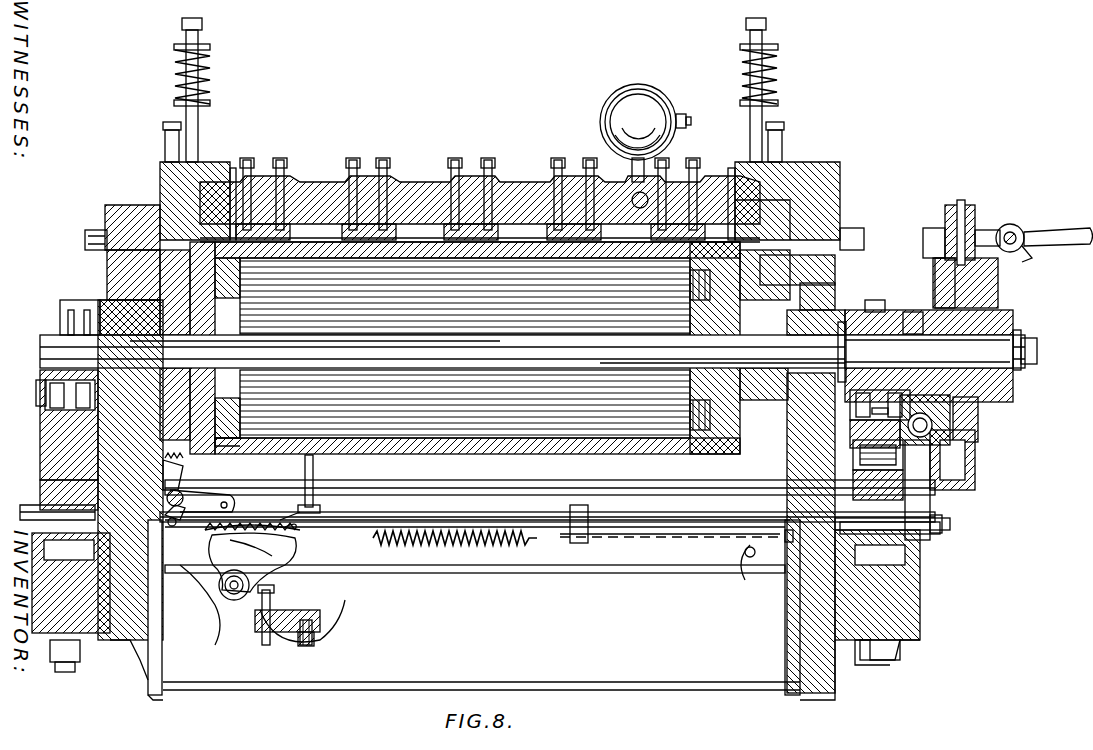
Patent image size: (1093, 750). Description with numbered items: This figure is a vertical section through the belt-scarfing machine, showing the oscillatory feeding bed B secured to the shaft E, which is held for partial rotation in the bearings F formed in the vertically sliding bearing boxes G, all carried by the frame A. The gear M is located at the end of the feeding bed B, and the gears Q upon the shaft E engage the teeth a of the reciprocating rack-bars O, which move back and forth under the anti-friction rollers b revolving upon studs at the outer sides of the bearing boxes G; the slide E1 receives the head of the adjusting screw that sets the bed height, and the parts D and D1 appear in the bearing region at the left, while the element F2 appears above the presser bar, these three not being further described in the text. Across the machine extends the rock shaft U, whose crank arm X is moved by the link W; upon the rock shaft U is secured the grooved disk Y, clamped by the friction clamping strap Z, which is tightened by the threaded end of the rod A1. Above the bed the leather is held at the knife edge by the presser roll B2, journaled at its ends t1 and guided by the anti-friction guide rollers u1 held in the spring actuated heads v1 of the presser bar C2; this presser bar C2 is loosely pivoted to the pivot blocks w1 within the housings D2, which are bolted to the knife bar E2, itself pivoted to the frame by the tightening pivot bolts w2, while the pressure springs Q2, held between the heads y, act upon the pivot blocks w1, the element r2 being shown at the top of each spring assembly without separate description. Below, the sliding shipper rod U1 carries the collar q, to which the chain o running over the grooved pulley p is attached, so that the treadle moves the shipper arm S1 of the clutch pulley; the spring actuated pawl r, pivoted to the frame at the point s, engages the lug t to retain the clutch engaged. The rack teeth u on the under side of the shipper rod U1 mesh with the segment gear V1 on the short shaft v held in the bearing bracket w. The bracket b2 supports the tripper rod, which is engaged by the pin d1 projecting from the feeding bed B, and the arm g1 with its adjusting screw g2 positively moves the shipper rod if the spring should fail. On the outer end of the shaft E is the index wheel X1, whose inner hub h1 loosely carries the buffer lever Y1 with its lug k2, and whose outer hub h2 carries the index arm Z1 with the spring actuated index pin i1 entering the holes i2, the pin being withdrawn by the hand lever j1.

The nut on spring rod r2 is at (202, 24).
The heads y is at (174, 50).
The pressure springs Q2 is at (176, 74).
The housings D2 is at (186, 112).
The pivot blocks w1 is at (165, 146).
The knife bar E2 is at (160, 186).
The tightening pivot bolts w2 is at (88, 238).
The bearings F is at (105, 232).
The gears Q is at (60, 302).
The shaft E is at (40, 348).
The anti-friction rollers b is at (56, 385).
The teeth a is at (70, 405).
The bearing cap D is at (60, 418).
The bearing cap bolt D1 is at (40, 510).
The slide E1 is at (90, 610).
The frame A is at (135, 668).
The rock shaft U is at (504, 480).
The shipper rod U1 is at (630, 512).
The collar q is at (578, 505).
The inner hub h1 is at (462, 548).
The chain o is at (668, 545).
The grooved pulley p is at (740, 548).
The pivot point s is at (200, 530).
The rack teeth u is at (300, 525).
The short shaft v is at (219, 584).
The segment gear V1 is at (250, 560).
The bearing bracket w is at (212, 615).
The arm g1 is at (320, 620).
The adjusting screw g2 is at (312, 604).
The lug or pin d1 is at (262, 640).
The bracket b2 is at (302, 648).
The shipper arm S1 is at (200, 522).
The spring actuated pawl r is at (212, 498).
The lug t is at (258, 510).
The ends of presser roll t1 is at (233, 168).
The anti-friction guide rollers u1 is at (262, 240).
The presser bar C2 is at (330, 182).
The presser roll B2 is at (430, 238).
The spring actuated heads v1 is at (466, 240).
The feeding bed B is at (510, 250).
The gauge F2 is at (645, 146).
The bearing boxes G is at (190, 402).
The gear M is at (255, 440).
The rod A1 is at (960, 375).
The outer hub h2 is at (1015, 324).
The crank arm X is at (950, 460).
The friction clamping strap Z is at (925, 460).
The link W is at (935, 414).
The rack-bars O is at (850, 430).
The disk Y is at (945, 526).
The lug k2 is at (958, 228).
The index pin i1 is at (930, 240).
The buffer lever Y1 is at (935, 265).
The holes i2 is at (1010, 224).
The index arm Z1 is at (1052, 228).
The hand lever j1 is at (1040, 248).
The index wheel X1 is at (163, 126).